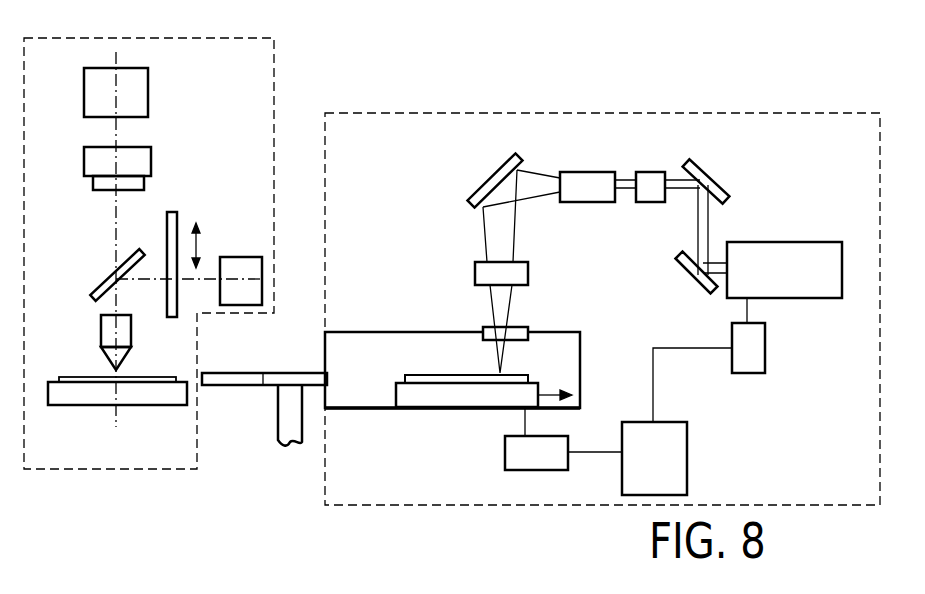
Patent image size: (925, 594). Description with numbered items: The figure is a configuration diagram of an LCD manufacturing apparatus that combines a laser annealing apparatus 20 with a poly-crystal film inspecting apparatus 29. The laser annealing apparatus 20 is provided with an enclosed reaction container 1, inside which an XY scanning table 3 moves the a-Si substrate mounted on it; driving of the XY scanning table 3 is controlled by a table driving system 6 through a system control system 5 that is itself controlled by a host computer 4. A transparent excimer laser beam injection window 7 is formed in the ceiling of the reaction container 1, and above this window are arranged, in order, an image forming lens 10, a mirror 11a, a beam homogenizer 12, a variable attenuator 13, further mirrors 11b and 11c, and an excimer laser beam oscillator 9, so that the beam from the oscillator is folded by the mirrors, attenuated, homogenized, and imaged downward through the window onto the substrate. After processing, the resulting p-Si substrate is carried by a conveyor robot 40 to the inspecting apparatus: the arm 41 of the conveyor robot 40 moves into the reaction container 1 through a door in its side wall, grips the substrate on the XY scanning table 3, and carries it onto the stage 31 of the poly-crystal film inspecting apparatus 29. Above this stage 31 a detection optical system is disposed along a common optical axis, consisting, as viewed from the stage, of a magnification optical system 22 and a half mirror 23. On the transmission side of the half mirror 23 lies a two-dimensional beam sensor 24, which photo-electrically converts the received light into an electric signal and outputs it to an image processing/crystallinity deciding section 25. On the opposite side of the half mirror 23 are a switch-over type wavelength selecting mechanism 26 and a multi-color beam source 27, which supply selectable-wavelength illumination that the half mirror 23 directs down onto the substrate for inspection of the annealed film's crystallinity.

The reaction container 1 is at (580, 343).
The XY scanning table 3 is at (415, 400).
The host computer 4 is at (765, 358).
The system control system 5 is at (687, 462).
The table driving system 6 is at (77, 376).
The excimer laser beam injection window 7 is at (522, 330).
The excimer laser beam oscillator 9 is at (795, 242).
The image forming lens 10 is at (528, 266).
The mirror 11a is at (493, 172).
The mirror 11b is at (715, 178).
The mirror 11c is at (687, 278).
The beam homogenizer 12 is at (582, 172).
The variable attenuator 13 is at (655, 172).
The laser annealing apparatus 20 is at (502, 507).
The magnification optical system 22 is at (131, 340).
The half mirror 23 is at (95, 292).
The two-dimensional beam sensor 24 is at (151, 160).
The image processing/crystallinity deciding section 25 is at (148, 85).
The switch-over type wavelength selecting mechanism 26 is at (180, 222).
The multi-color beam source 27 is at (245, 257).
The poly-crystal film inspecting apparatus 29 is at (274, 62).
The stage 31 is at (85, 405).
The conveyor robot 40 is at (278, 440).
The arm 41 is at (223, 373).